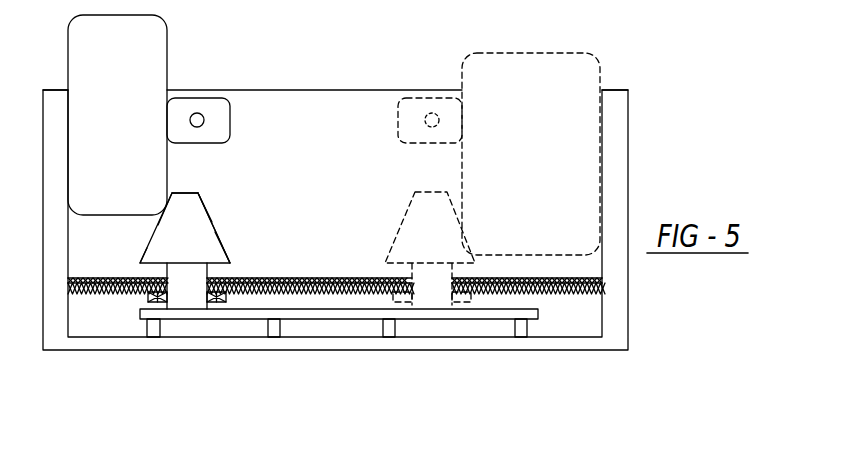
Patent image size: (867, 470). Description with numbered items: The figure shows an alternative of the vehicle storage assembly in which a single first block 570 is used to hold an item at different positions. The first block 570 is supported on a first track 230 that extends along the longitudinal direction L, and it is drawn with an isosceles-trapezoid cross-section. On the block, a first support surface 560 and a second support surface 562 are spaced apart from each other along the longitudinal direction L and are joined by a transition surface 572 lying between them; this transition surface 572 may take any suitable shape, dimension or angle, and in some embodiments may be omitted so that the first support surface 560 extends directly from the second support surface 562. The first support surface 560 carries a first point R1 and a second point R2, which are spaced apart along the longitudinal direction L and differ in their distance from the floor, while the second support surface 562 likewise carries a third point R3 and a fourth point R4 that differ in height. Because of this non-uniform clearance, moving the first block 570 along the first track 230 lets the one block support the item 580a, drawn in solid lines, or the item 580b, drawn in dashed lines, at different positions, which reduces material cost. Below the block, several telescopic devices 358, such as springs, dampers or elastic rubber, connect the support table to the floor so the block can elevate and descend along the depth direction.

The first track 230 is at (313, 270).
The telescopic devices 358 is at (528, 327).
The first support surface 560 is at (151, 230).
The second support surface 562 is at (219, 229).
The first block 570 is at (197, 239).
The transition surface 572 is at (185, 191).
The item 580a is at (138, 98).
The item 580b is at (550, 163).
The first point R1 is at (146, 253).
The second point R2 is at (161, 212).
The third point R3 is at (208, 212).
The fourth point R4 is at (228, 251).
The longitudinal direction L is at (366, 362).